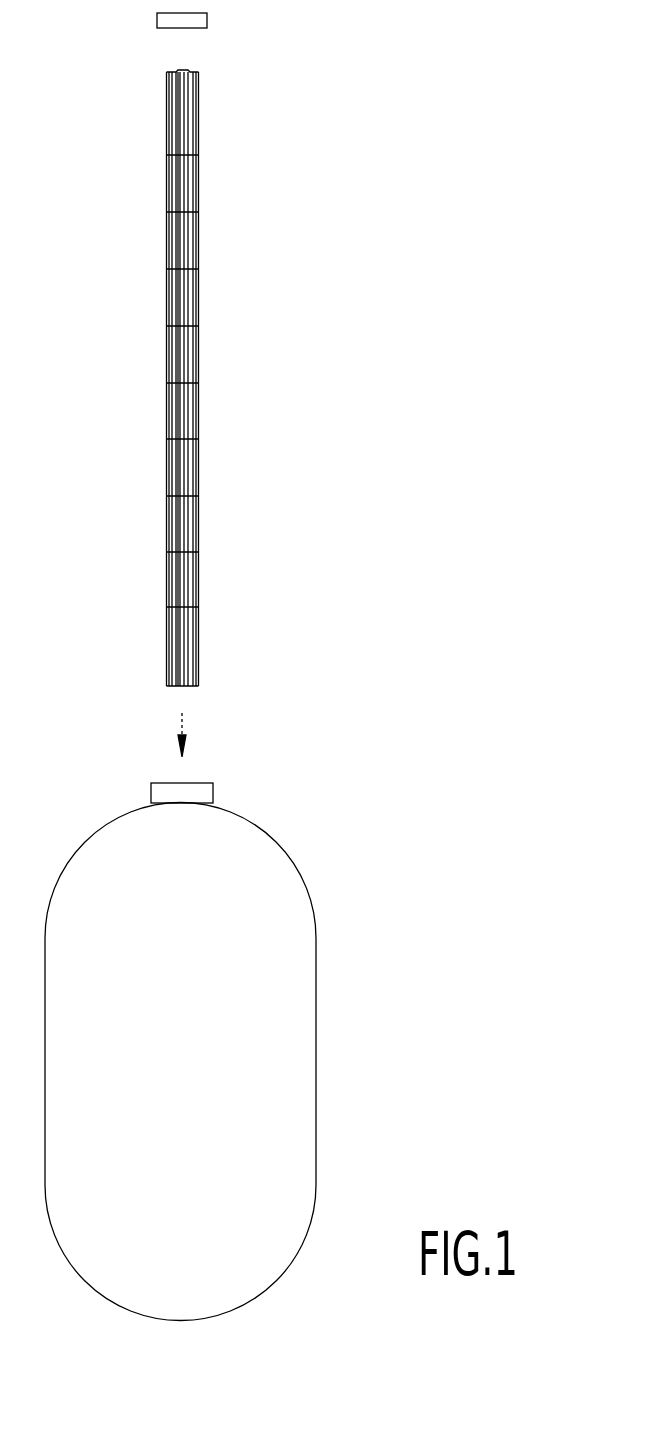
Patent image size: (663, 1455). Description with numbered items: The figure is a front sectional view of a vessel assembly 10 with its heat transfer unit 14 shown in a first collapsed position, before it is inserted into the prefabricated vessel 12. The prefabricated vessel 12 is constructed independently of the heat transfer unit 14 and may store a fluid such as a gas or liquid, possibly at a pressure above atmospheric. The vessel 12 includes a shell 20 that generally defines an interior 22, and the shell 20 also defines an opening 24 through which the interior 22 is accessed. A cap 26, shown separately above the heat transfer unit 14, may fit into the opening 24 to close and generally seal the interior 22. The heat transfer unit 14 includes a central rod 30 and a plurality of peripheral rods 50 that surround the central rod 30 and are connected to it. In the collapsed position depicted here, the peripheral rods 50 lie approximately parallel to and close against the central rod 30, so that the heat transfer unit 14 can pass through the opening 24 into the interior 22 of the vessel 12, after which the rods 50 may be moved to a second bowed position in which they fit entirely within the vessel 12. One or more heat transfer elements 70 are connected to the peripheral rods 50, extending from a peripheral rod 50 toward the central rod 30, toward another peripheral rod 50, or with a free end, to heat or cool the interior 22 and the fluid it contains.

The vessel assembly 10 is at (446, 203).
The prefabricated vessel 12 is at (255, 1015).
The heat transfer unit 14 is at (277, 480).
The shell 20 is at (317, 942).
The interior 22 is at (192, 1052).
The opening 24 is at (192, 795).
The cap 26 is at (207, 24).
The central rod 30 is at (185, 348).
The peripheral rods 50 is at (197, 410).
The heat transfer element 70 is at (170, 440).